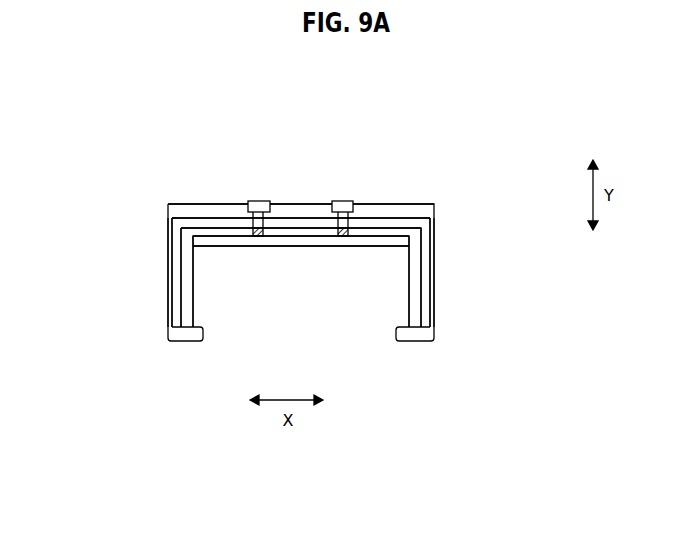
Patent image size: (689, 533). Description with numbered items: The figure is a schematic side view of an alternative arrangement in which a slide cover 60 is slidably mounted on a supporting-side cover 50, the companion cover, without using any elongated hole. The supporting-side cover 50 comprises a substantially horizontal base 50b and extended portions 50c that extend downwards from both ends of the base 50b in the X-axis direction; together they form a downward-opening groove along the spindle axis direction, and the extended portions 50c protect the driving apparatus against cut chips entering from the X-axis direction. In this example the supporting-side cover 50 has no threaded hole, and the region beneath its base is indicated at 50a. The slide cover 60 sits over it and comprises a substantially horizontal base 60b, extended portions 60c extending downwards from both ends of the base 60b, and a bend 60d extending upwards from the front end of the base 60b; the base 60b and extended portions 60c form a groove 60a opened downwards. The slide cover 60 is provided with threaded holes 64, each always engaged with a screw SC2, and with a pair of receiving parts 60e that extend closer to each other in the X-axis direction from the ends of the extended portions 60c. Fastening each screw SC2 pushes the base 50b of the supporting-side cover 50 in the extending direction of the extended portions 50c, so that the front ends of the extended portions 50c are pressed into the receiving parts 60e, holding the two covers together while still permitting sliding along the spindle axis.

The slide cover 60 is at (437, 217).
The groove 60a is at (222, 230).
The base 60b is at (390, 219).
The extended portion 60c is at (168, 243).
The bend 60d is at (188, 203).
The receiving part 60e is at (186, 342).
The supporting-side cover 50 is at (423, 312).
The shield bottom plate 50a is at (290, 249).
The base 50b is at (374, 230).
The extended portion 50c is at (193, 297).
The screw SC2 is at (256, 201).
The threaded hole 64 is at (342, 228).